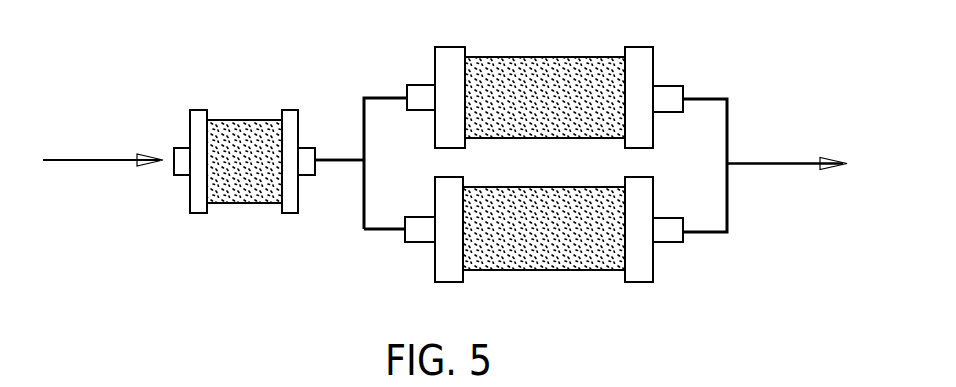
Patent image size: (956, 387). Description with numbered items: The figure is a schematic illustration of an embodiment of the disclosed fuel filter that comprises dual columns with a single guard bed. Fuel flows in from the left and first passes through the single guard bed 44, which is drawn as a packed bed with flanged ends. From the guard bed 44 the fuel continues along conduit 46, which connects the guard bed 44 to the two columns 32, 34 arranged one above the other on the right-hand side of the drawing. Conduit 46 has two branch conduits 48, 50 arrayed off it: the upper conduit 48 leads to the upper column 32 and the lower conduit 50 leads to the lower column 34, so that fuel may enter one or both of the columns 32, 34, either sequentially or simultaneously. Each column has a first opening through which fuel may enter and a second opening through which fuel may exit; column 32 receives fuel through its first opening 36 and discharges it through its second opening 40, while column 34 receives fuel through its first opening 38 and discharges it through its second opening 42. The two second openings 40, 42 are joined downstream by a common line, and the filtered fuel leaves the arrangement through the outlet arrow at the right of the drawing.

The column 32 is at (540, 57).
The column 34 is at (550, 270).
The first opening 36 is at (420, 84).
The first opening 38 is at (420, 243).
The second opening 40 is at (667, 86).
The second opening 42 is at (667, 243).
The guard bed 44 is at (247, 120).
The conduit 46 is at (345, 162).
The conduit 48 is at (380, 97).
The conduit 50 is at (378, 230).